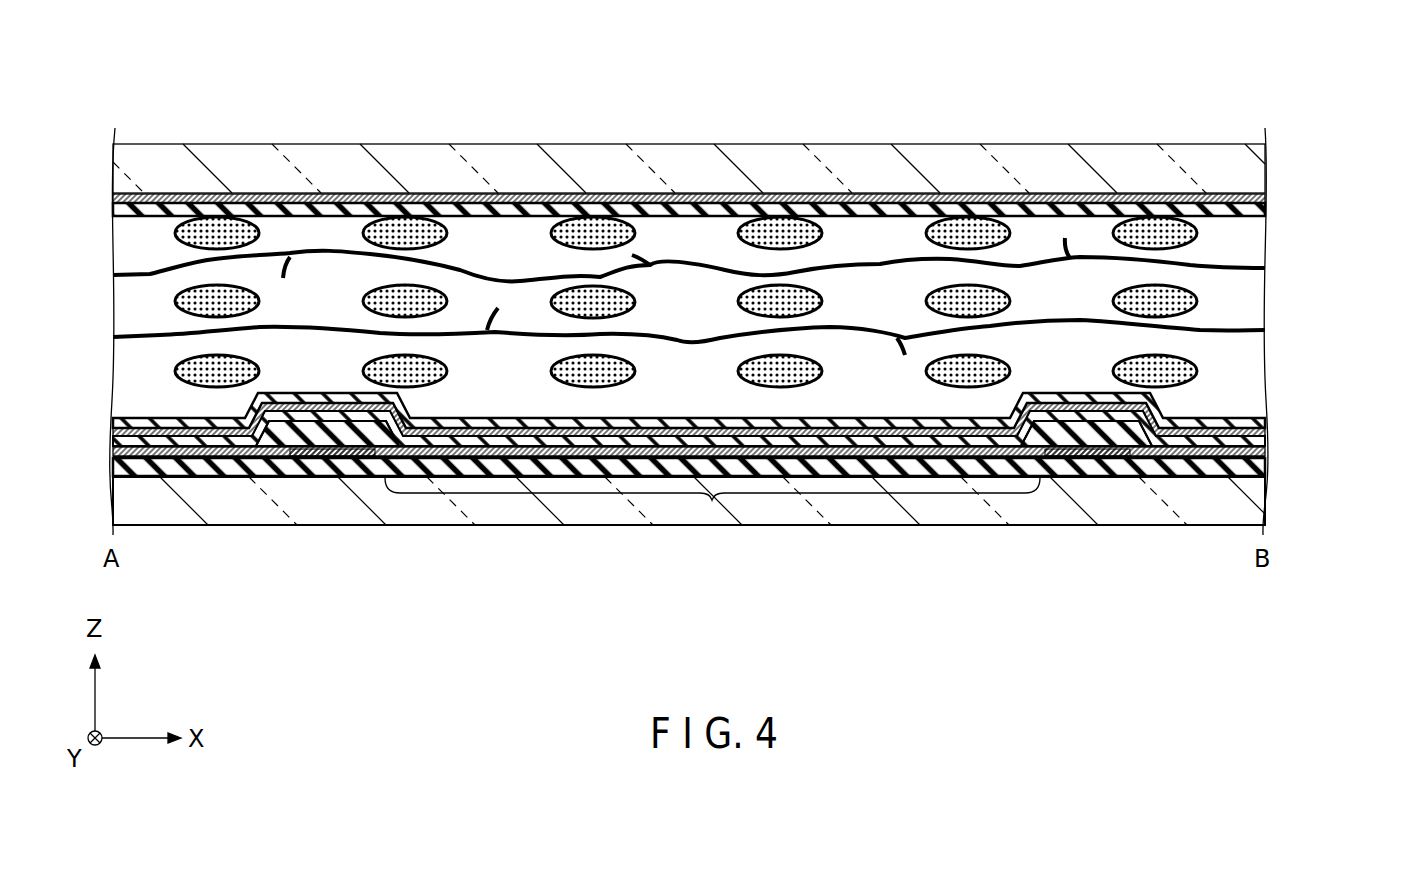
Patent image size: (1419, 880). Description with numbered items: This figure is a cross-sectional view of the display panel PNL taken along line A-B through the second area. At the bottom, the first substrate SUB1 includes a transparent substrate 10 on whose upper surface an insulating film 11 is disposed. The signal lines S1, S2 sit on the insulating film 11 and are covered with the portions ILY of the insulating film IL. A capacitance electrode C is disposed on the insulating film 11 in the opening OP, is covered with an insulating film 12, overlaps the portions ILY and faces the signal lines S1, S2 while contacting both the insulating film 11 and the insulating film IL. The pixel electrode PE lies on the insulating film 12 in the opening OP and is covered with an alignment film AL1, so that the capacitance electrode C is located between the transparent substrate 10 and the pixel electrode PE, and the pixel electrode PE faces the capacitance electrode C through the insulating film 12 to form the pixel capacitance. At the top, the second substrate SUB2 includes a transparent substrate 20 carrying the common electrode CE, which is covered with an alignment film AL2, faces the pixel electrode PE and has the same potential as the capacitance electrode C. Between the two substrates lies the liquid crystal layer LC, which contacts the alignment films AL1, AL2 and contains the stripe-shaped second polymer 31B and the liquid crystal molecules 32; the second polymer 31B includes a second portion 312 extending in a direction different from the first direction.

The display panel PNL is at (1183, 141).
The transparent substrate 20 is at (759, 174).
The second substrate SUB2 is at (1278, 158).
The common electrode CE is at (1265, 200).
The alignment film AL2 is at (1222, 218).
The liquid crystal layer LC is at (726, 304).
The second polymer 31B is at (689, 314).
The second portion 312 is at (897, 355).
The liquid crystal molecules 32 is at (1011, 367).
The transparent substrate 10 is at (759, 498).
The alignment film AL1 is at (1232, 422).
The pixel electrode PE is at (166, 430).
The insulating film 12 is at (1265, 443).
The portions of the insulating film ILY is at (337, 444).
The signal line S1 is at (312, 450).
The signal line S2 is at (1067, 450).
The capacitance electrode C is at (1265, 455).
The insulating film 11 is at (1265, 468).
The opening OP is at (712, 500).
The first substrate SUB1 is at (1282, 515).